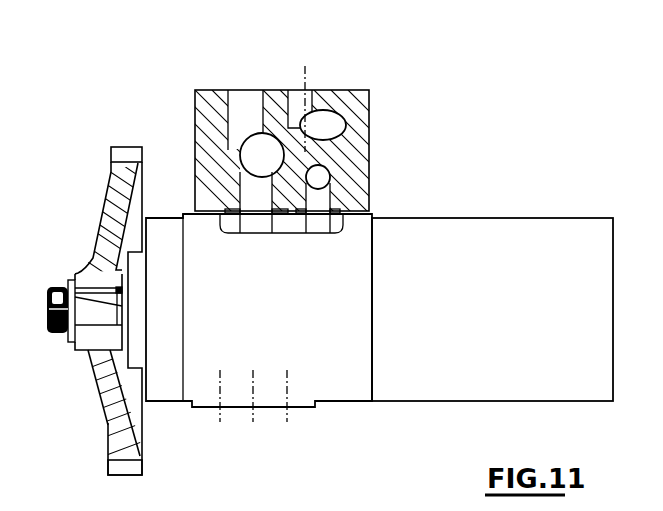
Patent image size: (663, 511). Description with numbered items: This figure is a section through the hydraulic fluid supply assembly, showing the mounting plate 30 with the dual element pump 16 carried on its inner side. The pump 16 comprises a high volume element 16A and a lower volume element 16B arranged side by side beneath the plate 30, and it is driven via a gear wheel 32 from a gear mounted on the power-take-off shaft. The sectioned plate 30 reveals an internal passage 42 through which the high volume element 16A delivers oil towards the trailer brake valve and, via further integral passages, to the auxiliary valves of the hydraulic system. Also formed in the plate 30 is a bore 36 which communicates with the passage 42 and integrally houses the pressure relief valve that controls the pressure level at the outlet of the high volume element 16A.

The dual element pump 16 is at (379, 332).
The high volume element 16A is at (323, 323).
The lower volume element 16B is at (527, 320).
The mounting plate 30 is at (208, 90).
The gear wheel 32 is at (108, 402).
The bore 36 is at (250, 152).
The internal passage 42 is at (253, 92).